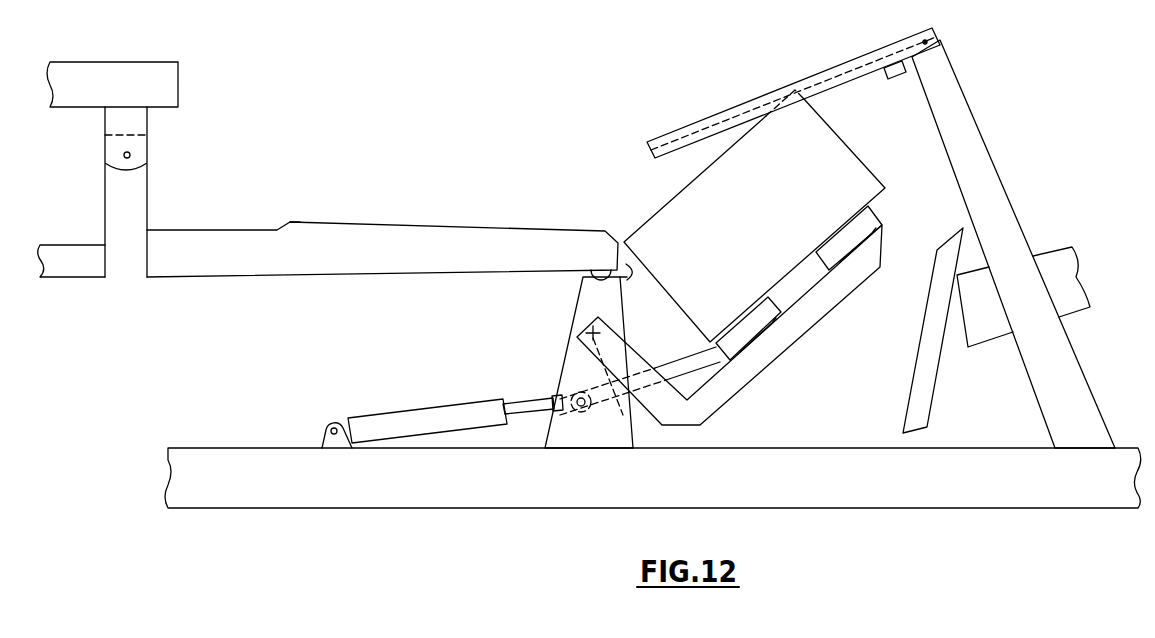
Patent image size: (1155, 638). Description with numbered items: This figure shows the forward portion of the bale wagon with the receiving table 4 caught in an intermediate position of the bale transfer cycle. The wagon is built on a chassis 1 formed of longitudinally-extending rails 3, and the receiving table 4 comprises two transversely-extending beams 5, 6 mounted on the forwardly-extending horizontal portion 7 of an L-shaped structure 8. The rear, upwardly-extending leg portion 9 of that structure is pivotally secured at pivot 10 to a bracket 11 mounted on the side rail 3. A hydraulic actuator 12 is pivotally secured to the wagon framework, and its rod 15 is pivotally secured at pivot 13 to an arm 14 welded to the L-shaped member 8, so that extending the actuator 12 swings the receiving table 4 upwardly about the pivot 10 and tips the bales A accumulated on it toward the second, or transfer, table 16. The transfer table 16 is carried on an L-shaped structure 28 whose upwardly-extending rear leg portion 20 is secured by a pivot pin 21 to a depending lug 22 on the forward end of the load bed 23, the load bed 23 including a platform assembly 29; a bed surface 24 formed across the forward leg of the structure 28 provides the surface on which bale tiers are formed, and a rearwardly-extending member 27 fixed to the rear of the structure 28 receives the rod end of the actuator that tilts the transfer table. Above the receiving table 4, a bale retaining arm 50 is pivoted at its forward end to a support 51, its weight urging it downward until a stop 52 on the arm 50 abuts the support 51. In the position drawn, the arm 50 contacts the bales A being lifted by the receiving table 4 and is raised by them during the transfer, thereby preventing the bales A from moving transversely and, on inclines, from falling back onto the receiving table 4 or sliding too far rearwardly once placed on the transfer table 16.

The chassis 1 is at (812, 516).
The longitudinally-extending rail 3 is at (653, 503).
The receiving table 4 is at (729, 330).
The transversely-extending beam 5 is at (782, 306).
The transversely-extending beam 6 is at (826, 277).
The horizontal portion 7 is at (729, 330).
The L-shaped structure 8 is at (800, 353).
The upwardly-extending leg portion 9 is at (648, 362).
The pivot 10 is at (600, 333).
The bracket 11 is at (577, 307).
The hydraulic actuator 12 is at (427, 407).
The pivot 13 is at (578, 398).
The arm 14 is at (617, 405).
The rod 15 is at (525, 403).
The transfer table 16 is at (389, 275).
The upwardly-extending rear leg portion 20 is at (160, 192).
The pivot pin 21 is at (130, 155).
The depending lug 22 is at (148, 125).
The load bed 23 is at (112, 66).
The bed surface 24 is at (257, 218).
The rearwardly-extending member 27 is at (62, 245).
The L-shaped structure 28 is at (408, 278).
The platform assembly 29 is at (97, 51).
The bale retaining arm 50 is at (820, 72).
The support 51 is at (973, 113).
The stop 52 is at (895, 78).
The bale A is at (667, 200).